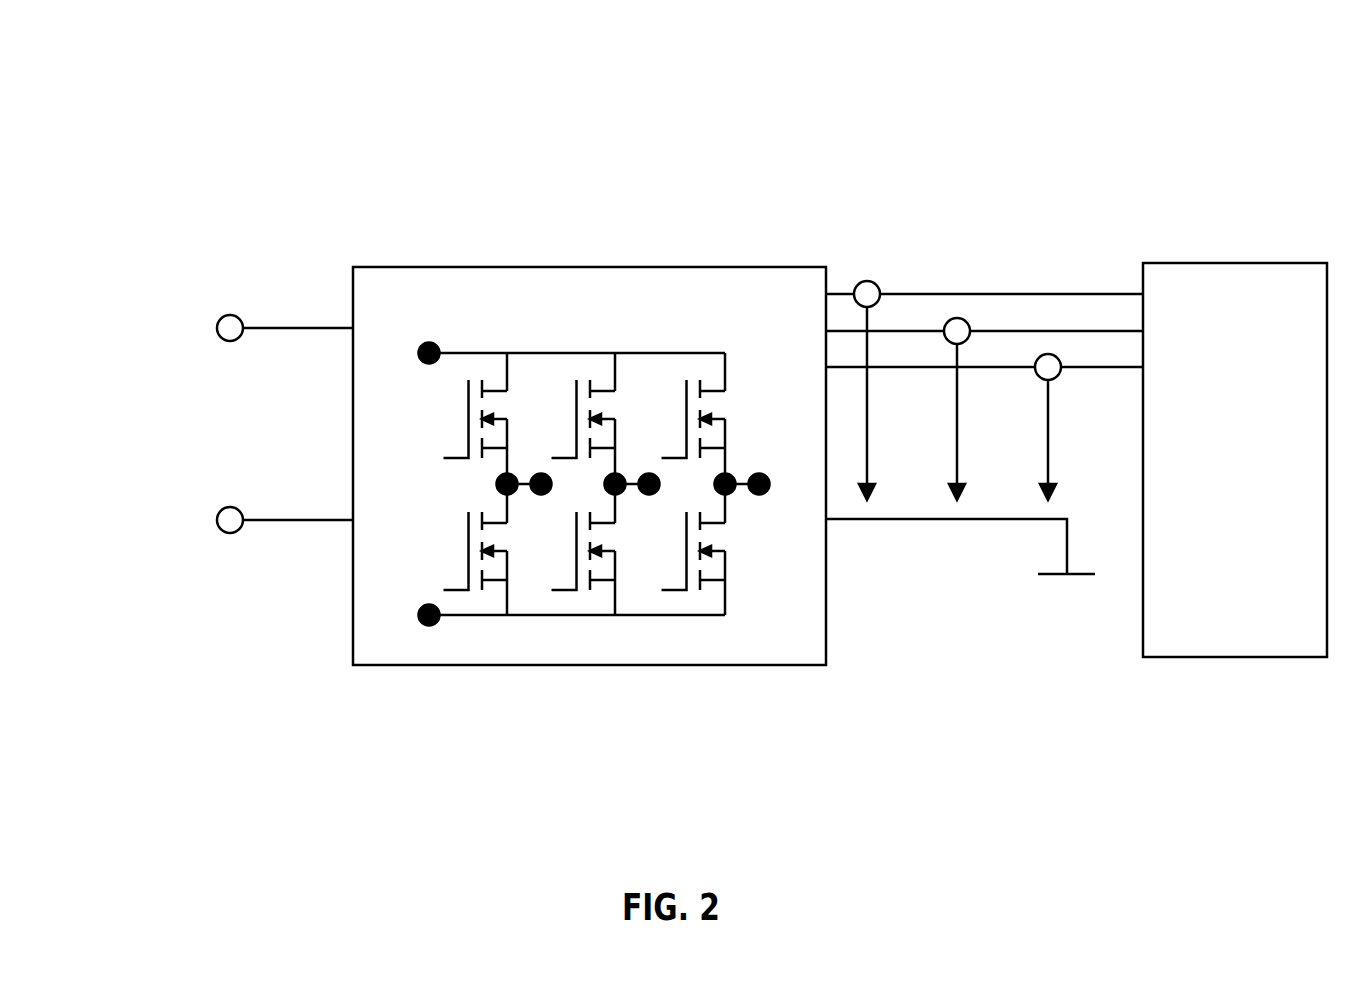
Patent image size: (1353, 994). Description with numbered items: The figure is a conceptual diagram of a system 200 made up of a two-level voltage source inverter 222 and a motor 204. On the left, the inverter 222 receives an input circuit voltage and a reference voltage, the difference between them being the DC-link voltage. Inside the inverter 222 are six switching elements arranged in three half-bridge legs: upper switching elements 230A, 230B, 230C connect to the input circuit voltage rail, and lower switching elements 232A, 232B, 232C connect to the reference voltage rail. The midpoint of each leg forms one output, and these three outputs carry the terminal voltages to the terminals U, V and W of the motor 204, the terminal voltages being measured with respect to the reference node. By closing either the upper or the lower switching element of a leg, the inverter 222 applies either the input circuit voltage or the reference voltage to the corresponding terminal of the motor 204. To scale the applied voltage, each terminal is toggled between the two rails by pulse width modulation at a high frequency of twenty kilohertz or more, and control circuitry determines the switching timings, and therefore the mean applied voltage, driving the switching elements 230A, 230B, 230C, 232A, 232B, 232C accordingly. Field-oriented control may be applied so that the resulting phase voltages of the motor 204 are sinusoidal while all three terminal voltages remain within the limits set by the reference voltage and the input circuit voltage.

The system 200 is at (152, 68).
The two-level voltage source inverter 222 is at (727, 267).
The motor 204 is at (1235, 460).
The switching element 230A is at (448, 458).
The switching element 230B is at (577, 458).
The switching element 230C is at (684, 458).
The switching element 232A is at (449, 592).
The switching element 232B is at (576, 592).
The switching element 232C is at (684, 592).